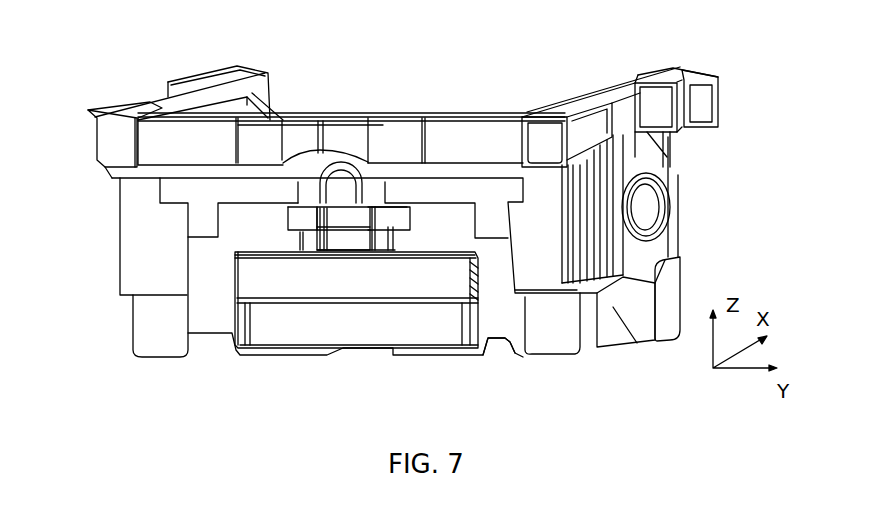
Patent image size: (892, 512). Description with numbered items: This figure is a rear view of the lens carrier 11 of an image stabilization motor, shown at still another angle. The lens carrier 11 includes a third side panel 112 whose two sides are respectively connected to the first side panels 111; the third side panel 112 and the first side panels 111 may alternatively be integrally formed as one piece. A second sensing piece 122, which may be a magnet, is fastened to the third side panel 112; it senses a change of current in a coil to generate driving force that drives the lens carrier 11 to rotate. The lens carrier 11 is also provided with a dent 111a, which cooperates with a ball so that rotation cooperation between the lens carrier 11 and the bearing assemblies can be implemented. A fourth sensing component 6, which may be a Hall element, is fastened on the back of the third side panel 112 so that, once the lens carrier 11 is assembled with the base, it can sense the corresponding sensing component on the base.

The lens carrier 11 is at (452, 117).
The first side panel 111 is at (673, 293).
The dent 111a is at (650, 205).
The third side panel 112 is at (507, 322).
The second sensing piece 122 is at (360, 330).
The fourth sensing component 6 is at (362, 241).